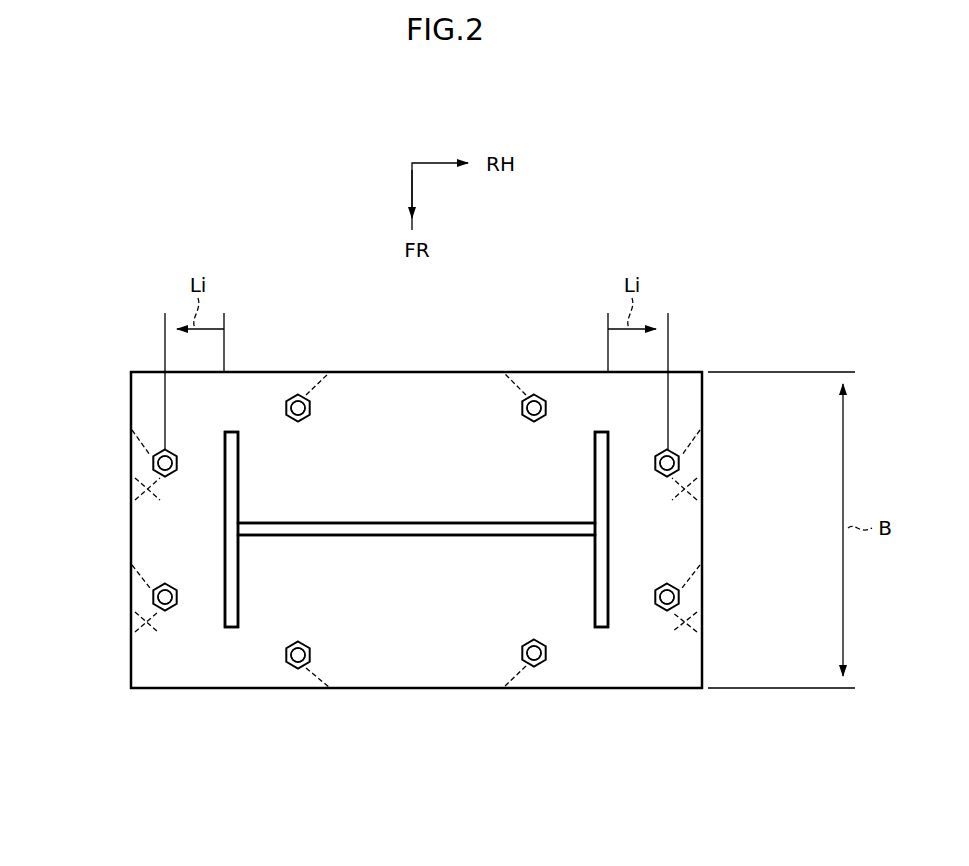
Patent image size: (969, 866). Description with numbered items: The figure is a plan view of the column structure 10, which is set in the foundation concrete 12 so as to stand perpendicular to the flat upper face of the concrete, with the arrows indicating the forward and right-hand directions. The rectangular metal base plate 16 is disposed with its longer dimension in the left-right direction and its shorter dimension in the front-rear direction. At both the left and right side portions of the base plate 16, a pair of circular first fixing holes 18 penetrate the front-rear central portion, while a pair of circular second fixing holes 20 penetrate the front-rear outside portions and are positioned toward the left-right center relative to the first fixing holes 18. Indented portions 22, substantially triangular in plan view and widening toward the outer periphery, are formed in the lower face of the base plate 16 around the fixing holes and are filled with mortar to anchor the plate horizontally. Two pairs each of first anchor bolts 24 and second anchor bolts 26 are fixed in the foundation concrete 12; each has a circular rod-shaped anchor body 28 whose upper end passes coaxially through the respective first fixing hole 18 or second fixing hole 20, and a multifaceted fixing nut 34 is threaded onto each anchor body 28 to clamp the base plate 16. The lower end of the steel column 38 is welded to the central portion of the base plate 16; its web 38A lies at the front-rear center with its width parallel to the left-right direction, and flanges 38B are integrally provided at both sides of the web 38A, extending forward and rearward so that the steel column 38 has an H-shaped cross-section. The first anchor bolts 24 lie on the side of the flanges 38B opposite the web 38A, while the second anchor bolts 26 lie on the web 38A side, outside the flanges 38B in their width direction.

The column structure 10 is at (124, 230).
The foundation concrete 12 is at (670, 238).
The base plate 16 is at (398, 372).
The first fixing hole 18 is at (150, 462).
The second fixing hole 20 is at (297, 395).
The indented portion 22 is at (305, 395).
The first anchor bolt 24 is at (158, 447).
The second anchor bolt 26 is at (283, 405).
The anchor body 28 is at (312, 413).
The fixing nut 34 is at (296, 422).
The steel column 38 is at (365, 522).
The web 38A is at (445, 530).
The flange 38B is at (238, 568).